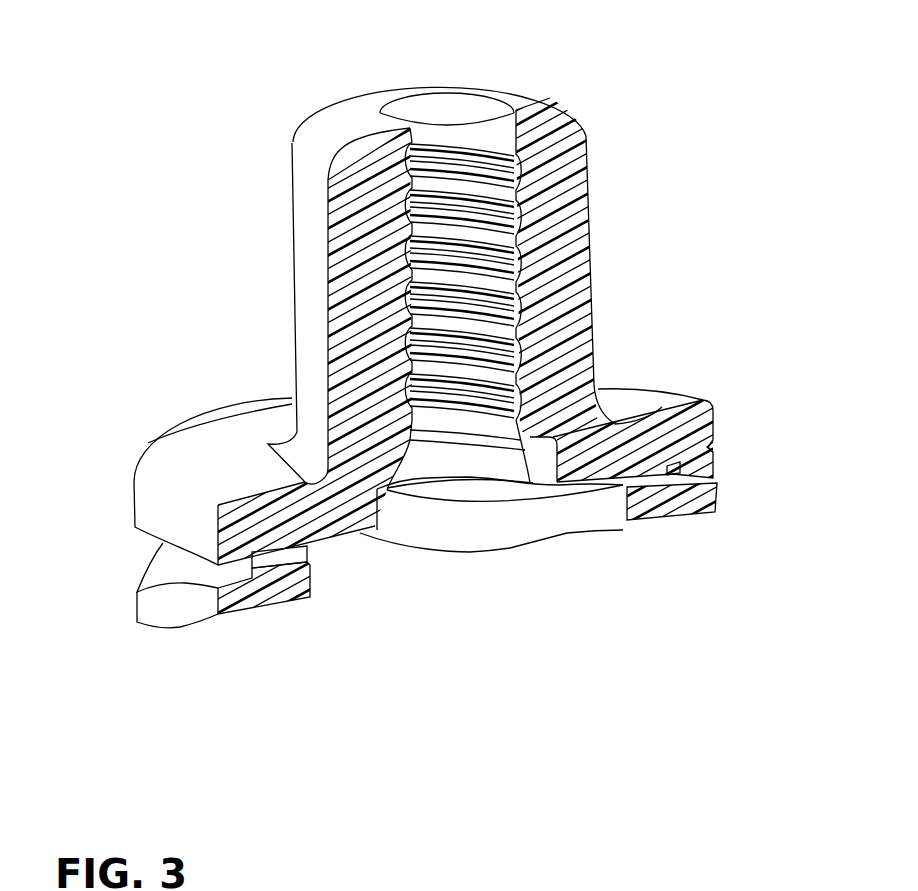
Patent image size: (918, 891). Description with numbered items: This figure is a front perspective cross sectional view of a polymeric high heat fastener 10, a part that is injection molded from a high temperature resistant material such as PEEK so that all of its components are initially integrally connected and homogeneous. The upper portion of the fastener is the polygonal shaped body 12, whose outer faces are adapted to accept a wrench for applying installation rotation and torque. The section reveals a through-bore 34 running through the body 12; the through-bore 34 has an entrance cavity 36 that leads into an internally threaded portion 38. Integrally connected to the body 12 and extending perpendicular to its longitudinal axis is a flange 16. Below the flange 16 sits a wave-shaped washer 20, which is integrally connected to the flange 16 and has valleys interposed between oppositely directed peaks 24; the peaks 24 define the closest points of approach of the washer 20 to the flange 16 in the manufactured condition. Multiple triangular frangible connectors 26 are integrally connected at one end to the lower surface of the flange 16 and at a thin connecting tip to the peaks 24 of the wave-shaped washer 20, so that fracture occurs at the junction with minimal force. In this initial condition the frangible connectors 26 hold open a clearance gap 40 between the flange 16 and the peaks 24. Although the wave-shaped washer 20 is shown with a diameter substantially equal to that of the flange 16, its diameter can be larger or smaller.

The polymeric high heat fastener 10 is at (700, 183).
The polygonal shaped body 12 is at (430, 420).
The flange 16 is at (414, 439).
The wave-shaped washer 20 is at (447, 420).
The peaks 24 is at (245, 567).
The frangible connectors 26 is at (710, 443).
The through-bore 34 is at (470, 95).
The entrance cavity 36 is at (527, 437).
The internally threaded portion 38 is at (550, 147).
The clearance gap 40 is at (672, 470).